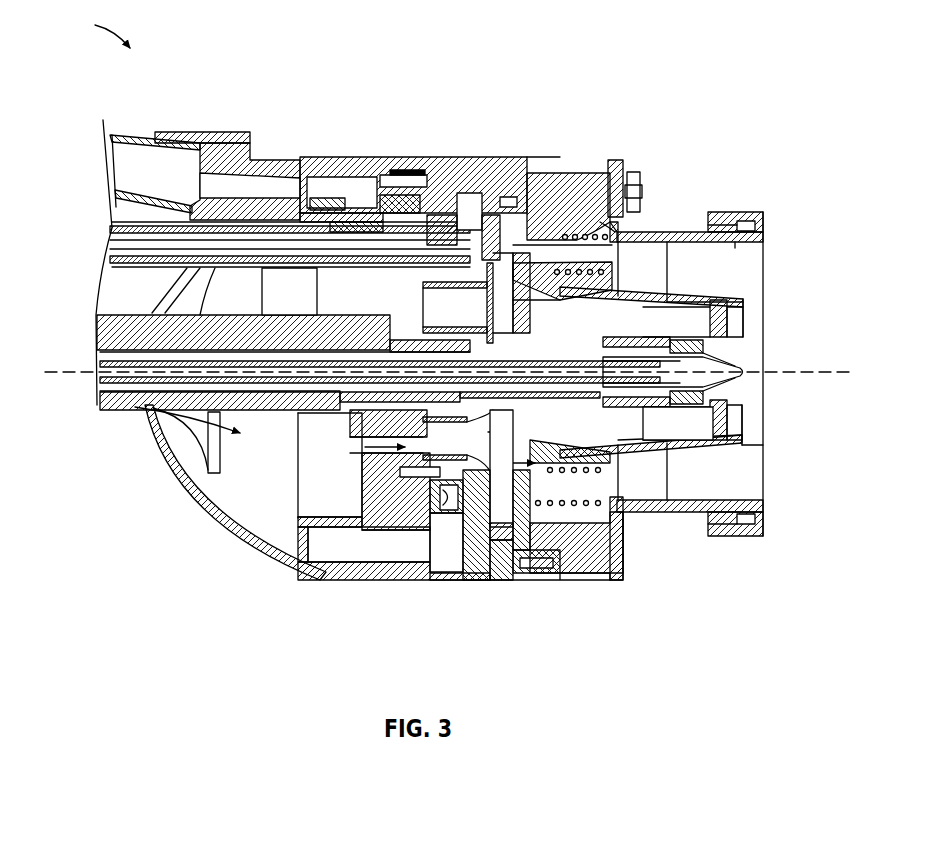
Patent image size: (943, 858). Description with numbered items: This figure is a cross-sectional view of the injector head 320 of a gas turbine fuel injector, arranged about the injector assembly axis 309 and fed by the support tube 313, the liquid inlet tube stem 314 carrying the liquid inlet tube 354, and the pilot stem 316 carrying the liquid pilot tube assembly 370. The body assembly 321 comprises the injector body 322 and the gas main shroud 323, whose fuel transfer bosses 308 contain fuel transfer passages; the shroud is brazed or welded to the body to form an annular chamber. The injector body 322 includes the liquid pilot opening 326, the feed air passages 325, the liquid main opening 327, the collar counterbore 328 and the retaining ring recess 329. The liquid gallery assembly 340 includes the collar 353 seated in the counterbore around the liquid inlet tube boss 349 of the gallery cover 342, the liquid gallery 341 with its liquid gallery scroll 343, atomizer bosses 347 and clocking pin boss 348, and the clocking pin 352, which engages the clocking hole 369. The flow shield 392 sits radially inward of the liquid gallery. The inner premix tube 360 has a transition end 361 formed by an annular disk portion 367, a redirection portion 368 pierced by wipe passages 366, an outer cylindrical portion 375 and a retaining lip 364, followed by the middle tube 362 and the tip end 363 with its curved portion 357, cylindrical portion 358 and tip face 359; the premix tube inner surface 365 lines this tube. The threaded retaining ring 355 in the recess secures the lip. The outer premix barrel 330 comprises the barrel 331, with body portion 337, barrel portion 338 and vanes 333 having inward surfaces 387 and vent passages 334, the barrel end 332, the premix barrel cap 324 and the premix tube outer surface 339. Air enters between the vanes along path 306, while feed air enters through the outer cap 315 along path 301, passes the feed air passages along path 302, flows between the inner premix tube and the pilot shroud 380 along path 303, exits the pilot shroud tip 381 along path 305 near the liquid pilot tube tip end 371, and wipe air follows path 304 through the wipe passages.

The injector head 320 is at (89, 31).
The support tube 313 is at (113, 137).
The fuel transfer bosses 308 is at (287, 285).
The liquid inlet tube stem 314 is at (118, 222).
The liquid inlet tube 354 is at (118, 247).
The pilot stem 316 is at (110, 333).
The liquid pilot opening 326 is at (320, 310).
The liquid pilot tube assembly 370 is at (137, 393).
The path 301 is at (174, 456).
The outer cap 315 is at (200, 497).
The feed air passages 325 is at (337, 448).
The path 302 is at (388, 448).
The gas main shroud 323 is at (327, 568).
The flow shield 392 is at (382, 562).
The injector body 322 is at (392, 570).
The gallery cover 342 is at (440, 520).
The liquid gallery scroll 343 is at (452, 512).
The liquid gallery 341 is at (477, 515).
The atomizer bosses 347 is at (510, 520).
The retaining ring 355 is at (530, 565).
The transition end 361 is at (598, 585).
The annular disk portion 367 is at (578, 560).
The redirection portion 368 is at (650, 570).
The body portion 337 is at (632, 520).
The barrel portion 338 is at (653, 508).
The inner premix tube 360 is at (676, 460).
The inward surface 387 is at (603, 477).
The vent passages 334 is at (580, 490).
The curved portion 357 is at (677, 440).
The cylindrical portion 358 is at (737, 443).
The tip end 363 is at (733, 408).
The path 305 is at (740, 400).
The pilot shroud tip 381 is at (743, 398).
The injector assembly axis 309 is at (787, 371).
The liquid pilot tube tip end 371 is at (742, 370).
The tip face 359 is at (747, 320).
The premix tube outer surface 339 is at (735, 245).
The premix tube inner surface 365 is at (697, 297).
The middle tube 362 is at (645, 278).
The vanes 333 is at (605, 245).
The premix barrel cap 324 is at (740, 212).
The barrel end 332 is at (702, 232).
The clocking hole 369 is at (642, 187).
The outer premix barrel 330 is at (662, 125).
The barrel 331 is at (612, 162).
The path 306 is at (595, 150).
The retaining ring recess 329 is at (548, 170).
The retaining lip 364 is at (522, 167).
The clocking pin boss 348 is at (487, 232).
The clocking pin 352 is at (445, 227).
The liquid gallery assembly 340 is at (440, 205).
The body assembly 321 is at (402, 155).
The liquid inlet tube boss 349 is at (410, 195).
The collar counterbore 328 is at (400, 215).
The liquid main opening 327 is at (375, 220).
The pilot shroud 380 is at (694, 411).
The outer cylindrical portion 375 is at (548, 468).
The path 303 is at (475, 447).
The path 304 is at (582, 334).
The wipe passages 366 is at (542, 282).
The collar 353 is at (405, 270).